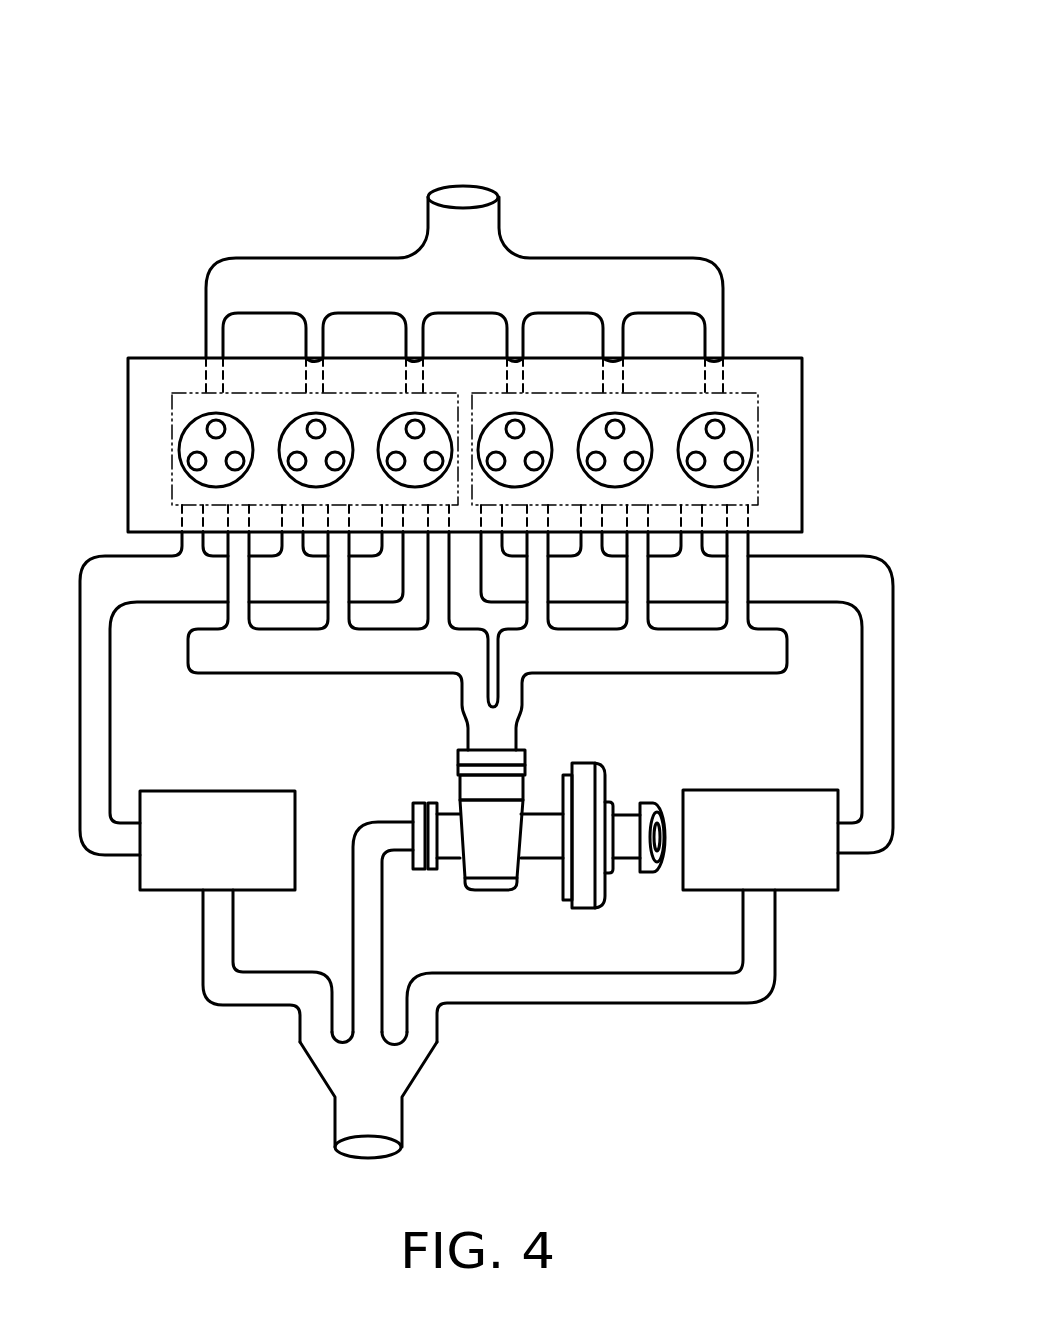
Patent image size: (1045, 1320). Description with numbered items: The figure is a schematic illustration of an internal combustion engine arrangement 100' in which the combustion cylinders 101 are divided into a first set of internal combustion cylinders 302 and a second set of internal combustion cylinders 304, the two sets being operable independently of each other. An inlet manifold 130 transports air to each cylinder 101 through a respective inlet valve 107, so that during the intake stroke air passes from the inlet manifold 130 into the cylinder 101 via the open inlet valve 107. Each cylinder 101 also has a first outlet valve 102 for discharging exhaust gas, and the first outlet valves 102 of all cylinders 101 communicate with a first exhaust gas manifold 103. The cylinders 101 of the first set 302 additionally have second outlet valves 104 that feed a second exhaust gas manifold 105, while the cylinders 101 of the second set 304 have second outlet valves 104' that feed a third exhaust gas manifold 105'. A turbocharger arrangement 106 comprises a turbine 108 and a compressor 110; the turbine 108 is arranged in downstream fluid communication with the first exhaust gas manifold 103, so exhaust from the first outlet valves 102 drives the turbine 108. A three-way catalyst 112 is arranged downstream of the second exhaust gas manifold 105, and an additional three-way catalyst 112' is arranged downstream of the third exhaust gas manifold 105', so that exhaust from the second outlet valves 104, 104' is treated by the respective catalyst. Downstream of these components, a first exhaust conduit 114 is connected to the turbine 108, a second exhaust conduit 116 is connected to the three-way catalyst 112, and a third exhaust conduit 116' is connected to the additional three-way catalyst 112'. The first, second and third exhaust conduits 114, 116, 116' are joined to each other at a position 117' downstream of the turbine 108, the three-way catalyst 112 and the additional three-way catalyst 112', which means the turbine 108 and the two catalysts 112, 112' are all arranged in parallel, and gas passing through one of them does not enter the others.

The internal combustion engine arrangement 100' is at (531, 288).
The cylinder 101 is at (180, 448).
The first outlet valve 102 is at (230, 458).
The second outlet valve 104 is at (232, 302).
The second outlet valve 104' is at (692, 264).
The inlet valve 107 is at (207, 428).
The inlet manifold 130 is at (397, 258).
The first set of internal combustion cylinders 302 is at (172, 492).
The second set of internal combustion cylinders 304 is at (759, 492).
The first exhaust gas manifold 103 is at (782, 662).
The second exhaust gas manifold 105 is at (241, 693).
The third exhaust gas manifold 105' is at (687, 692).
The turbocharger arrangement 106 is at (616, 766).
The turbine 108 is at (490, 891).
The compressor 110 is at (585, 910).
The three-way catalyst 112 is at (195, 876).
The additional three-way catalyst 112' is at (787, 875).
The first exhaust conduit 114 is at (355, 826).
The second exhaust conduit 116 is at (225, 966).
The third exhaust conduit 116' is at (635, 966).
The position 117' is at (400, 1095).